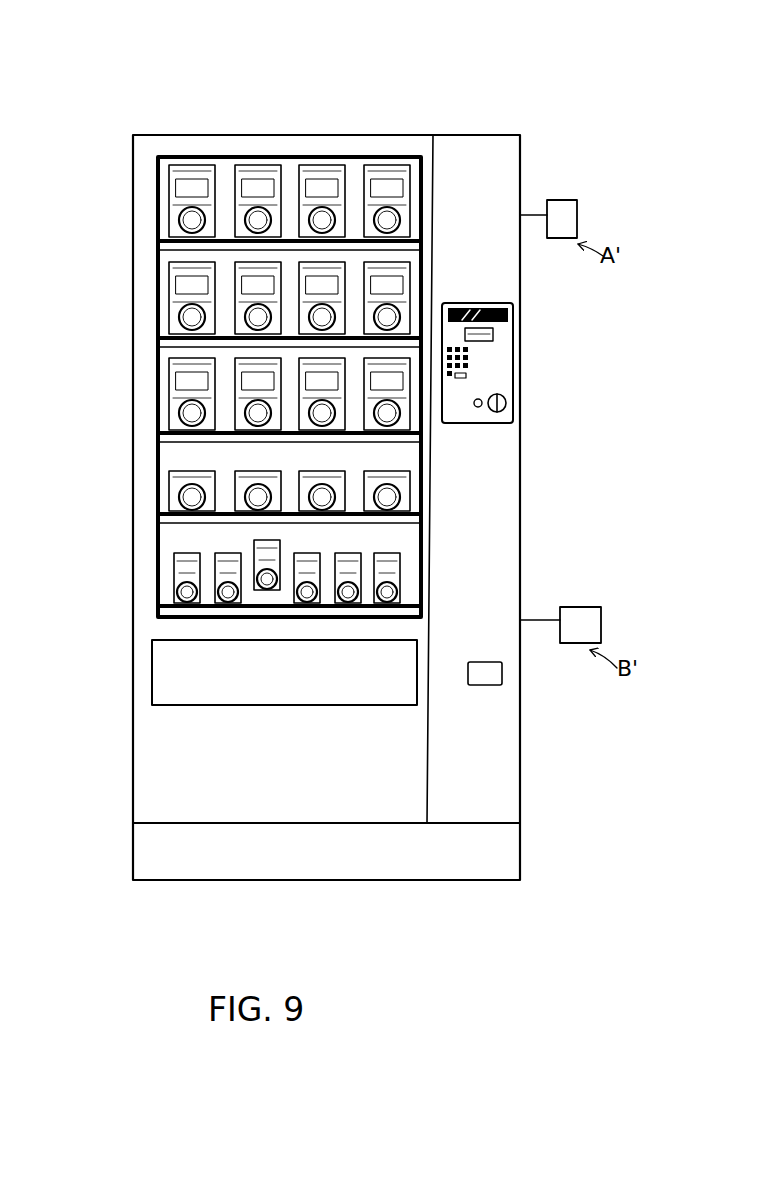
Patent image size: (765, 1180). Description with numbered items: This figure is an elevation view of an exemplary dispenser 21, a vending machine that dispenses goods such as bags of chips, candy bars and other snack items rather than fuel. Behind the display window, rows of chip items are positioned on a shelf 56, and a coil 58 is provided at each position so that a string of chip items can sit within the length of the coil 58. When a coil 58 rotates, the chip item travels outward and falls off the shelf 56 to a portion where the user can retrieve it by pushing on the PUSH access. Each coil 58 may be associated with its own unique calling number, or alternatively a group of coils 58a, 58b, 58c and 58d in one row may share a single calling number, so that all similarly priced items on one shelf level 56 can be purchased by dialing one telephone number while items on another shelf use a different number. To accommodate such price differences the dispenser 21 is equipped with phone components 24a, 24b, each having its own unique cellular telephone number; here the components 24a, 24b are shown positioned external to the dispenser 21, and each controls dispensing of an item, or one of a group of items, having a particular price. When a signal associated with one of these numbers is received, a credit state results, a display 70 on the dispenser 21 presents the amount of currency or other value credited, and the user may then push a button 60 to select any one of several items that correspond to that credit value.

The dispenser 21 is at (565, 95).
The shelf 56 is at (166, 244).
The coil 58 is at (236, 344).
The coil 58a is at (192, 213).
The coil 58b is at (243, 210).
The coil 58c is at (313, 210).
The coil 58d is at (376, 208).
The button 60 is at (462, 368).
The display 70 is at (492, 298).
The phone component 24a is at (565, 208).
The phone component 24b is at (588, 618).